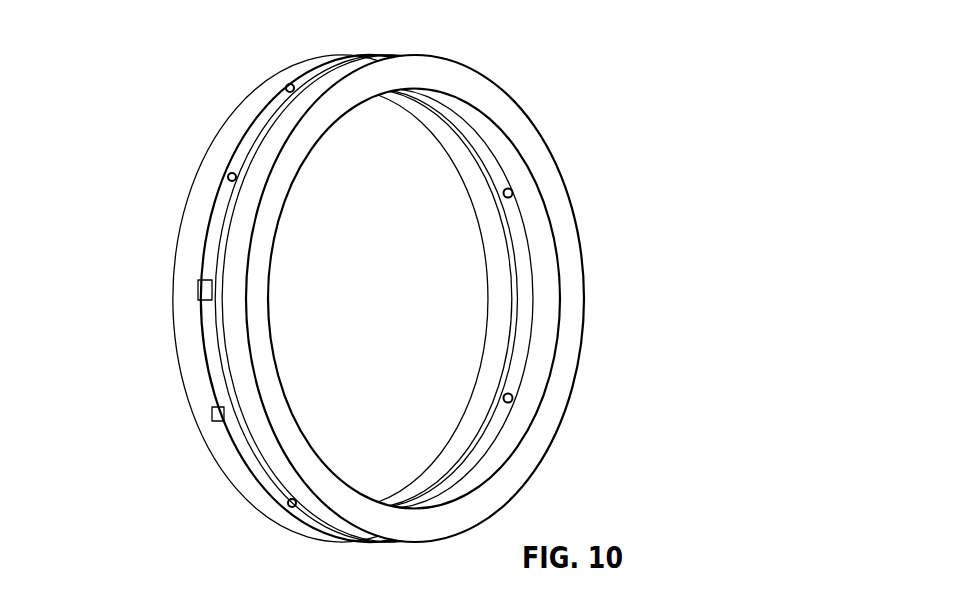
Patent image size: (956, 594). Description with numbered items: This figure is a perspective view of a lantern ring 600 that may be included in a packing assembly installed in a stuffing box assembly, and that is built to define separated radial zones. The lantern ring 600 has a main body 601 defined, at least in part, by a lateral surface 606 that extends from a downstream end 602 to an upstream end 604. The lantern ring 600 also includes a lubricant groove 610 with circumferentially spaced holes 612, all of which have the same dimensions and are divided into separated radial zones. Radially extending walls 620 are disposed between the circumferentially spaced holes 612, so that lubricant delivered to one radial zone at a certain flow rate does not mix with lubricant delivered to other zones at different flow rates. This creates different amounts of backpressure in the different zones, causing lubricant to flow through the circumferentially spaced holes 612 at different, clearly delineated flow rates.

The lantern ring 600 is at (154, 101).
The main body 601 is at (178, 376).
The downstream end 602 is at (160, 309).
The upstream end 604 is at (579, 310).
The lateral surface 606 is at (243, 99).
The lubricant groove 610 is at (244, 484).
The circumferentially spaced holes 612 is at (219, 417).
The radially extending walls 620 is at (209, 286).